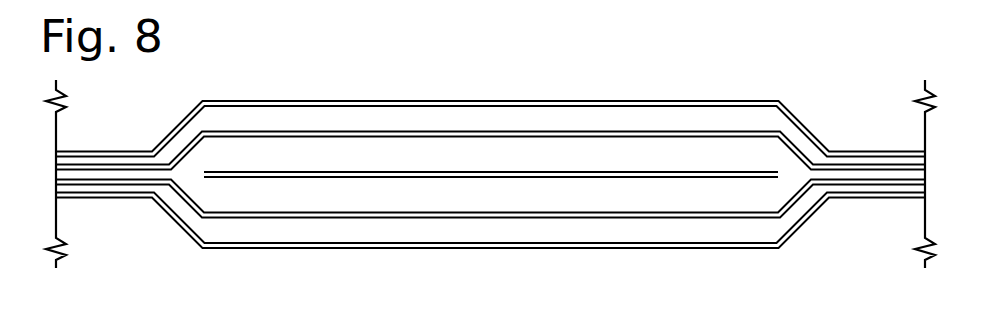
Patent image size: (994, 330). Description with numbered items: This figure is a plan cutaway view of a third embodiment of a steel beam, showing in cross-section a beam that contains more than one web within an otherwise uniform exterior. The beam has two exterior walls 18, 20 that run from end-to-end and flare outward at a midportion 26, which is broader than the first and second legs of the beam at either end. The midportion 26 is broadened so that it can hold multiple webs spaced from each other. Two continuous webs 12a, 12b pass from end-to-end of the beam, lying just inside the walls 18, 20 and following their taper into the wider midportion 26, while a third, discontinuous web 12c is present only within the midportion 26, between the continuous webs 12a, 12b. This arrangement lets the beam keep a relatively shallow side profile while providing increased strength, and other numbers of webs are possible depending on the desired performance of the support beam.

The wall 18 is at (263, 101).
The wall 20 is at (573, 249).
The continuous web 12a is at (343, 132).
The continuous web 12b is at (497, 219).
The discontinuous web 12c is at (430, 172).
The midportion 26 is at (490, 162).